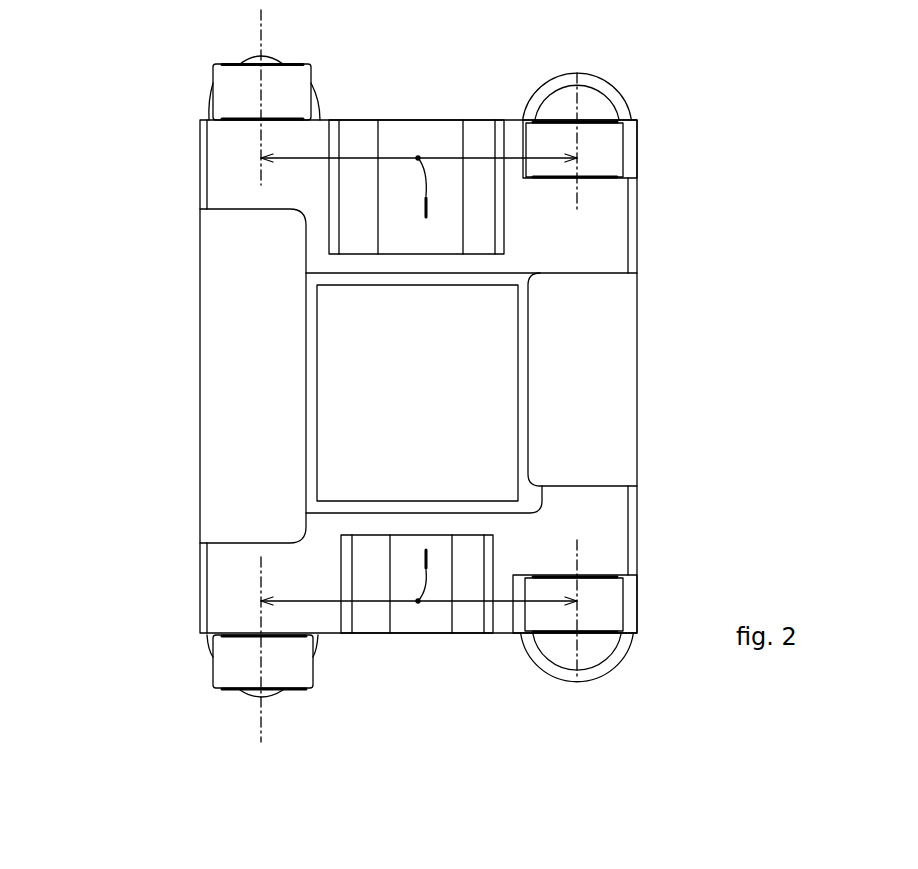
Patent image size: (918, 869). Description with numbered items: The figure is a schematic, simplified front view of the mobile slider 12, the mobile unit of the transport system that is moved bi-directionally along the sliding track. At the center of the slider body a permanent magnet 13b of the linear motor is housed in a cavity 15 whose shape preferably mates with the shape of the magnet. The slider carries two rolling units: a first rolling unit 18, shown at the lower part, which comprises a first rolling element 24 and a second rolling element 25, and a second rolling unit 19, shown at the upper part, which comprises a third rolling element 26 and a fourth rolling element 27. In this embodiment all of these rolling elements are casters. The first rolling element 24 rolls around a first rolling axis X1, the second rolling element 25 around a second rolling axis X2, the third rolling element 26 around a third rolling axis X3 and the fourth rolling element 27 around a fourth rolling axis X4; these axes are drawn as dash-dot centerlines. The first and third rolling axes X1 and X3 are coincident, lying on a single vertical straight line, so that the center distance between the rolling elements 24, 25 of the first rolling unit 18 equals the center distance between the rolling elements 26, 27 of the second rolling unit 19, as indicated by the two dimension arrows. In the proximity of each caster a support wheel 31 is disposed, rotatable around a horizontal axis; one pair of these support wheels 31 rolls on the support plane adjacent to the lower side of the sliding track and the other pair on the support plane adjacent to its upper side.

The mobile slider 12 is at (108, 140).
The permanent magnet 13b is at (437, 404).
The cavity 15 is at (318, 425).
The first rolling unit 18 is at (716, 504).
The second rolling unit 19 is at (718, 87).
The first rolling element 24 is at (230, 667).
The second rolling element 25 is at (607, 615).
The third rolling element 26 is at (230, 91).
The fourth rolling element 27 is at (607, 145).
The support wheels 31 is at (314, 103).
The first rolling axis X1 is at (261, 727).
The second rolling axis X2 is at (577, 565).
The third rolling axis X3 is at (261, 25).
The fourth rolling axis X4 is at (577, 195).